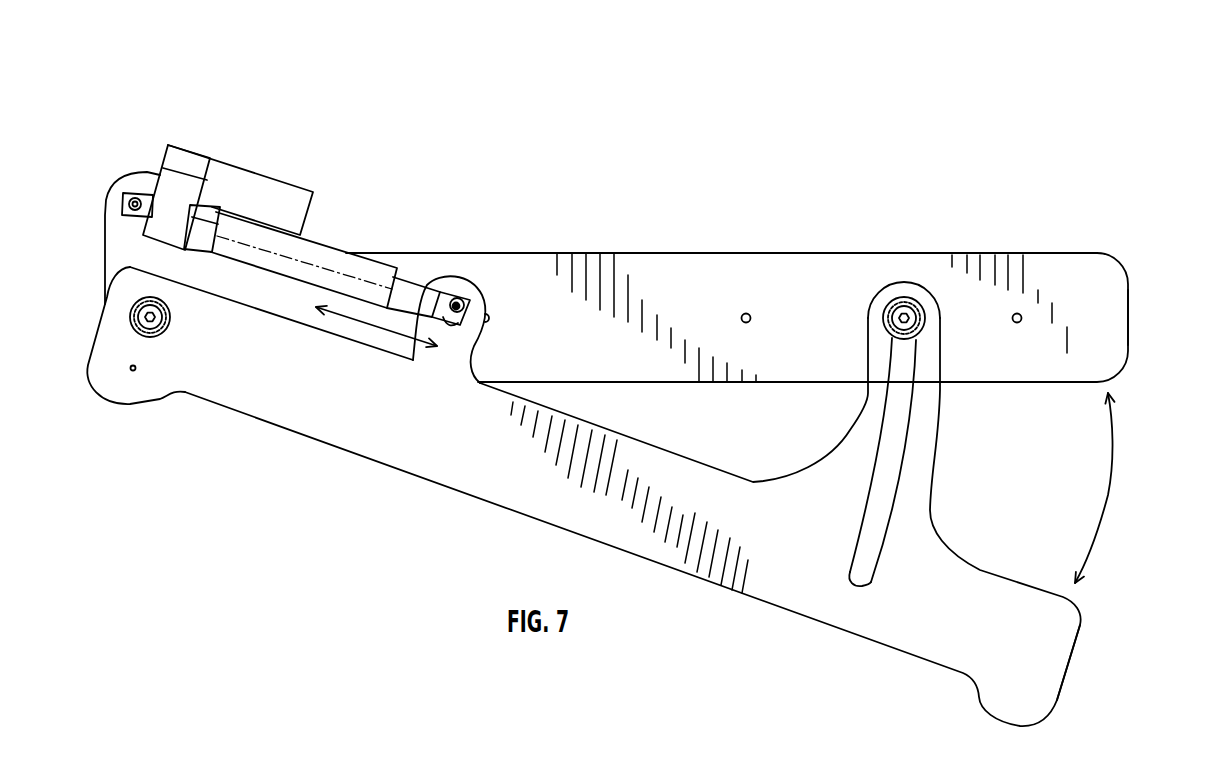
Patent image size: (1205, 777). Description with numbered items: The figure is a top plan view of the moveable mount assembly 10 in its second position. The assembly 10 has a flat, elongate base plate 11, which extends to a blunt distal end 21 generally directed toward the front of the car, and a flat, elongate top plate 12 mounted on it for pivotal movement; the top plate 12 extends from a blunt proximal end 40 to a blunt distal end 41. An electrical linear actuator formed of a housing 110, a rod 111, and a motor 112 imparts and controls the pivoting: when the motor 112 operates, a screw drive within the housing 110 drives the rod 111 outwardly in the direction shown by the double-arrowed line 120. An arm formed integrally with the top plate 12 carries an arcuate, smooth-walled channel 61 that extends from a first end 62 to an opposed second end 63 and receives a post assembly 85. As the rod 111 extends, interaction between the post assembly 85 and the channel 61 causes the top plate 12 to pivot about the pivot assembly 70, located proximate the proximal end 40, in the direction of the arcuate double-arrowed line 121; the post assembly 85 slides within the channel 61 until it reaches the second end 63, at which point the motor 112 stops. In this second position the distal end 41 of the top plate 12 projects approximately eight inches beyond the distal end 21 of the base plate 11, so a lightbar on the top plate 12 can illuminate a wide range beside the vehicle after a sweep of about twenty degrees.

The moveable mount assembly 10 is at (1029, 111).
The base plate 11 is at (1108, 280).
The top plate 12 is at (1063, 630).
The distal end of base plate 21 is at (1128, 314).
The proximal end of top plate 40 is at (100, 322).
The distal end of top plate 41 is at (1073, 662).
The channel 61 is at (908, 432).
The first end of channel 62 is at (874, 580).
The second end of channel 63 is at (922, 331).
The pivot assembly 70 is at (166, 329).
The post assembly 85 is at (881, 303).
The housing 110 is at (330, 246).
The rod 111 is at (418, 278).
The motor 112 is at (275, 180).
The double-arrowed line 120 is at (367, 330).
The arcuate double-arrowed line 121 is at (1110, 485).